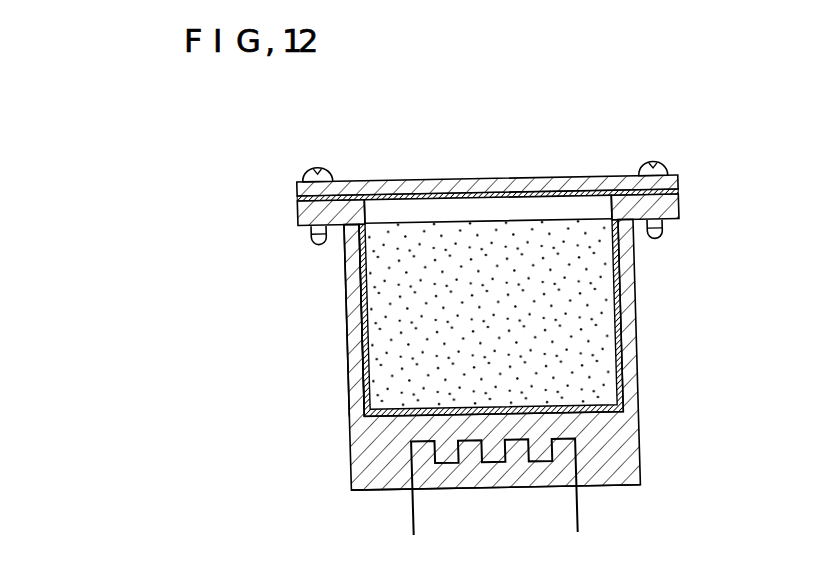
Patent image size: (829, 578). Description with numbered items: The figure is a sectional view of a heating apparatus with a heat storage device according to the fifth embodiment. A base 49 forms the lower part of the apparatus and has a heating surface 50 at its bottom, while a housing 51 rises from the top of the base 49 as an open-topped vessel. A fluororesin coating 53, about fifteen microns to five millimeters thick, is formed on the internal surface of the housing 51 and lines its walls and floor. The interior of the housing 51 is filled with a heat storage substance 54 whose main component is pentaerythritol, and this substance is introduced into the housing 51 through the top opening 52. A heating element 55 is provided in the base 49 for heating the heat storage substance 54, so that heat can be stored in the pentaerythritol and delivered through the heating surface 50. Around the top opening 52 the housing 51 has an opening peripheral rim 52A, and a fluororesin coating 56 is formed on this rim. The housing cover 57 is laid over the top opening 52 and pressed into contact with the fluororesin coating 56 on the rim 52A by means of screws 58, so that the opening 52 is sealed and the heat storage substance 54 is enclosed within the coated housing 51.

The base 49 is at (609, 442).
The heating surface 50 is at (493, 488).
The housing 51 is at (632, 320).
The top opening 52 is at (436, 202).
The opening peripheral rim 52A is at (672, 209).
The fluororesin coating 53 is at (370, 303).
The heat storage substance 54 is at (382, 370).
The heating element 55 is at (407, 515).
The fluororesin coating 56 is at (669, 170).
The housing cover 57 is at (526, 178).
The screws 58 is at (312, 166).